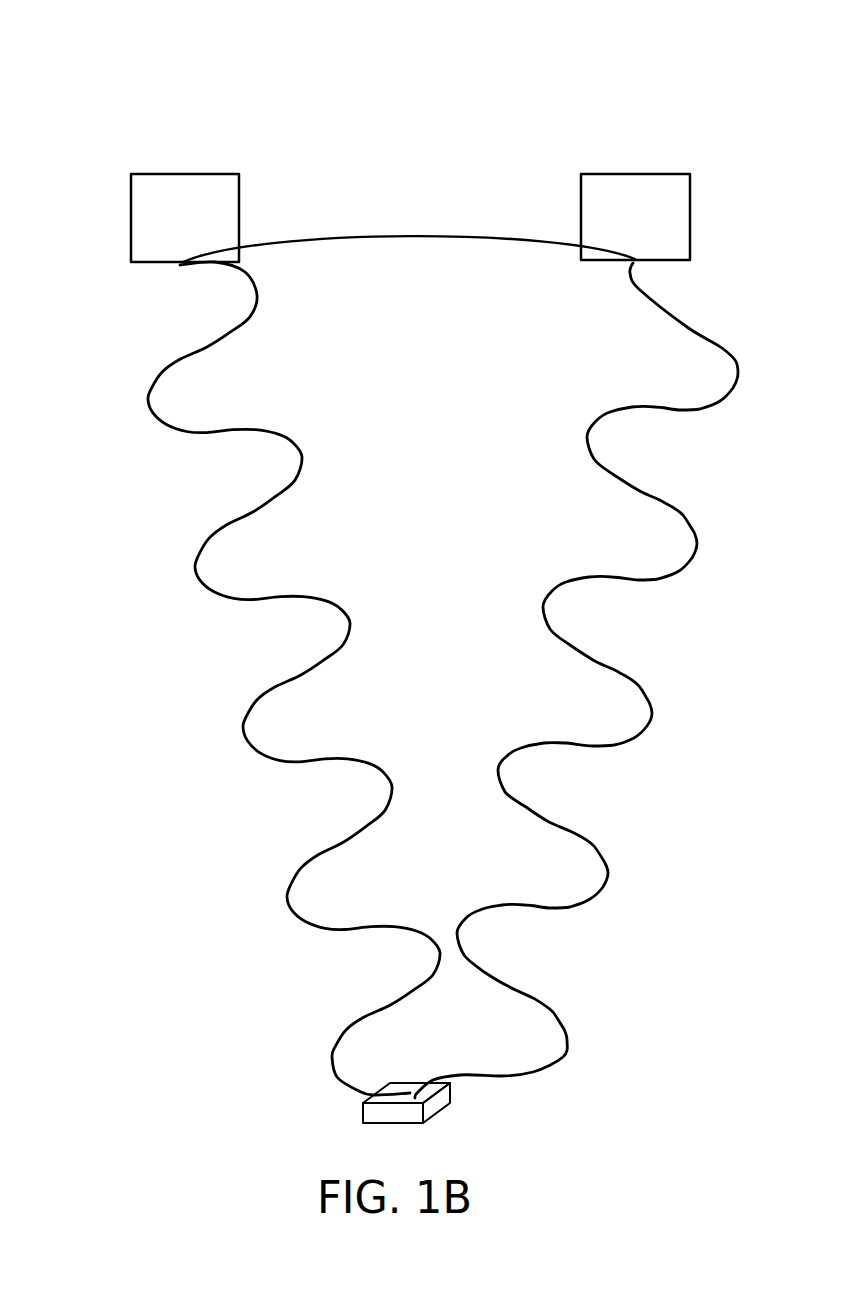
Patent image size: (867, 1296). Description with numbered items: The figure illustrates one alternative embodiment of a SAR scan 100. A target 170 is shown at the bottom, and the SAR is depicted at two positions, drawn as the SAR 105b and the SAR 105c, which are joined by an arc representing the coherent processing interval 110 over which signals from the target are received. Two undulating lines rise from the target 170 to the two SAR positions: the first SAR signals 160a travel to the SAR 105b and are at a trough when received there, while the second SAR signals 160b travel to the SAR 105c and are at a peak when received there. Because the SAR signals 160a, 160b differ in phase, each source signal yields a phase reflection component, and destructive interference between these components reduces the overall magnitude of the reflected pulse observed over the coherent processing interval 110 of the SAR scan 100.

The SAR scan 100 is at (78, 66).
The SAR 105b is at (210, 241).
The SAR 105c is at (661, 242).
The coherent processing interval 110 is at (440, 234).
The first SAR signals 160a is at (240, 723).
The second SAR signals 160b is at (653, 713).
The target 170 is at (433, 1103).